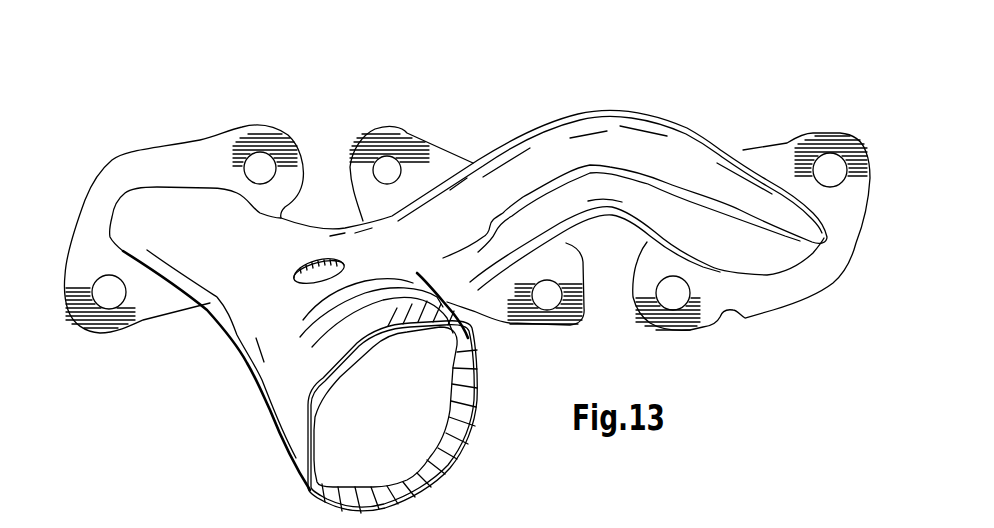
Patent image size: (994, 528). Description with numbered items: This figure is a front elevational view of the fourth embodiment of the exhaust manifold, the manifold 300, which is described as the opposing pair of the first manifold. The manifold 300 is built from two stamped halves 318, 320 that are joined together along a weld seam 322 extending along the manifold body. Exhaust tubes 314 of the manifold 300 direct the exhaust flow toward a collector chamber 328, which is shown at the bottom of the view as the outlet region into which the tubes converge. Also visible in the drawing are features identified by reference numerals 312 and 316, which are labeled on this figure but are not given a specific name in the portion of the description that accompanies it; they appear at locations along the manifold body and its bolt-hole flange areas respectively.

The manifold 300 is at (753, 371).
The collector 312 is at (272, 338).
The exhaust tubes 314 is at (734, 192).
The mounting flange 316 is at (213, 168).
The stamped half 318 is at (571, 141).
The stamped half 320 is at (571, 208).
The weld seam 322 is at (637, 175).
The collector chamber 328 is at (390, 421).